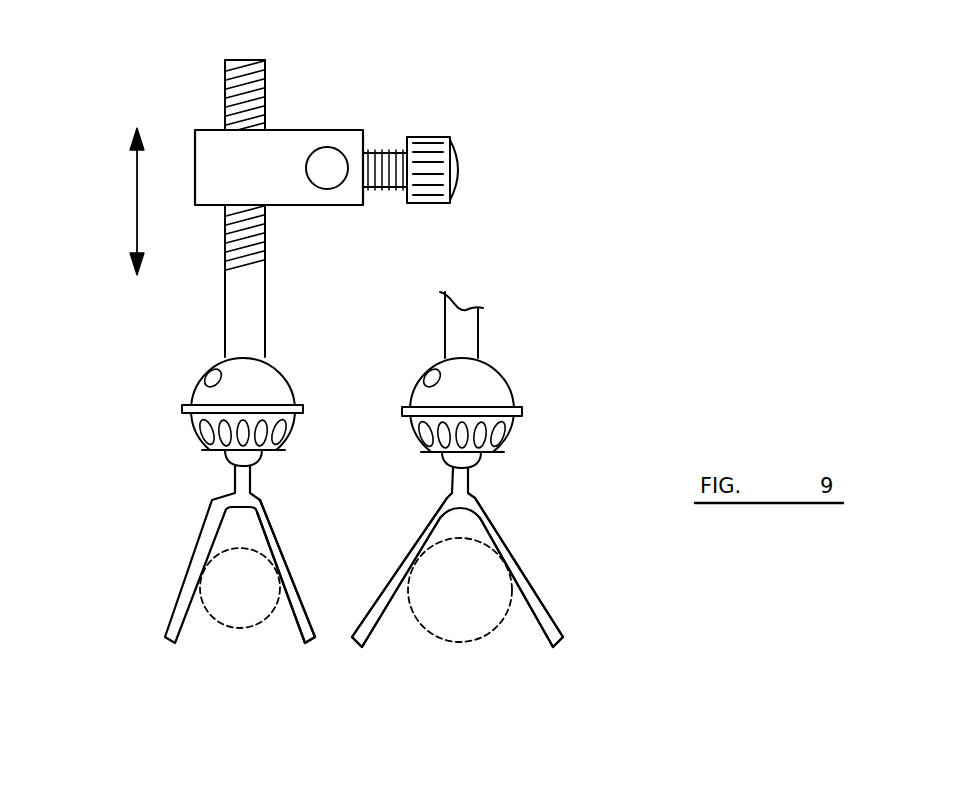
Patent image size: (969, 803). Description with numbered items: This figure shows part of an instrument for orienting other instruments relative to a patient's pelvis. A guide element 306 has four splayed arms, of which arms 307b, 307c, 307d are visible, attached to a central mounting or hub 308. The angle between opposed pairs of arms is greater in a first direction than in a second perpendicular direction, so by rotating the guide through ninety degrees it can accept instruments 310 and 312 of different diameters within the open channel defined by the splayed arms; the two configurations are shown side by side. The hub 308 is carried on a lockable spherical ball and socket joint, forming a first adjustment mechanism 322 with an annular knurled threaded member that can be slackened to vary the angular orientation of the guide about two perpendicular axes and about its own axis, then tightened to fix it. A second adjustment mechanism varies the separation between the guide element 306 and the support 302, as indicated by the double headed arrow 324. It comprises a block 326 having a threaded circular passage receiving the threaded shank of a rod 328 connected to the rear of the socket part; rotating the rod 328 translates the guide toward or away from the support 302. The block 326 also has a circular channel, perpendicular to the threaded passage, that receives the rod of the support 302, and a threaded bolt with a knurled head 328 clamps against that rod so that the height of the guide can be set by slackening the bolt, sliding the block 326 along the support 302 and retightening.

The support 302 is at (325, 167).
The guide element 306 is at (167, 584).
The splayed arm 307b is at (167, 641).
The splayed arm 307c is at (312, 648).
The splayed arm 307d is at (565, 642).
The central mounting or hub 308 is at (376, 584).
The instrument 310 is at (237, 630).
The instrument 312 is at (458, 643).
The ball socket 322 is at (300, 432).
The double headed arrow 324 is at (137, 205).
The block 326 is at (195, 155).
The rod / threaded bolt with knurled head 328 is at (430, 137).